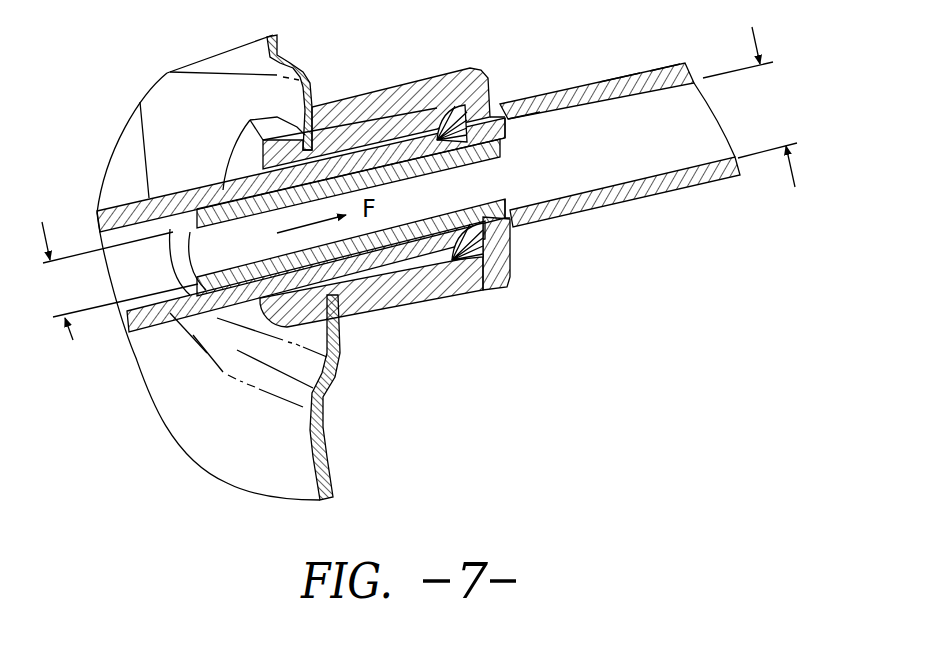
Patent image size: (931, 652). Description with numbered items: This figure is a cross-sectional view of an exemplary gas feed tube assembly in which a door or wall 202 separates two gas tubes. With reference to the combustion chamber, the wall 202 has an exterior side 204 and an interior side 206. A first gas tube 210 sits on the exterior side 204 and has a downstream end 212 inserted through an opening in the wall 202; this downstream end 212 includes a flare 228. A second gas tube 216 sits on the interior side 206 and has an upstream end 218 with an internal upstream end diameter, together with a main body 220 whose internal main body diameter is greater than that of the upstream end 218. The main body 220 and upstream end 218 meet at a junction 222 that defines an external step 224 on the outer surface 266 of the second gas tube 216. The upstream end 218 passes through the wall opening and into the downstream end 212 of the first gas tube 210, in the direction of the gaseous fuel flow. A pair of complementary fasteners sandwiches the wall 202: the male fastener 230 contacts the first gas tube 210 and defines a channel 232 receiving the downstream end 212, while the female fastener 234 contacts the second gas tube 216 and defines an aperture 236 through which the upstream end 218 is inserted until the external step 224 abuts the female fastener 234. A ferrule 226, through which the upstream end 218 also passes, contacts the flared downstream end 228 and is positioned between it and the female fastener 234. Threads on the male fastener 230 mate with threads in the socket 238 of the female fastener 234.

The wall 202 is at (267, 458).
The exterior side 204 is at (200, 412).
The interior side 206 is at (330, 424).
The first gas tube 210 is at (130, 207).
The downstream end 212 is at (407, 112).
The second gas tube 216 is at (657, 80).
The upstream end 218 is at (215, 305).
The main body 220 is at (637, 206).
The junction 222 is at (515, 150).
The external step 224 is at (501, 112).
The ferrule 226 is at (462, 108).
The flare 228 is at (450, 300).
The male fastener 230 is at (248, 151).
The channel 232 is at (353, 134).
The female fastener 234 is at (493, 273).
The aperture 236 is at (516, 210).
The socket 238 is at (456, 242).
The outer surface 266 is at (622, 76).